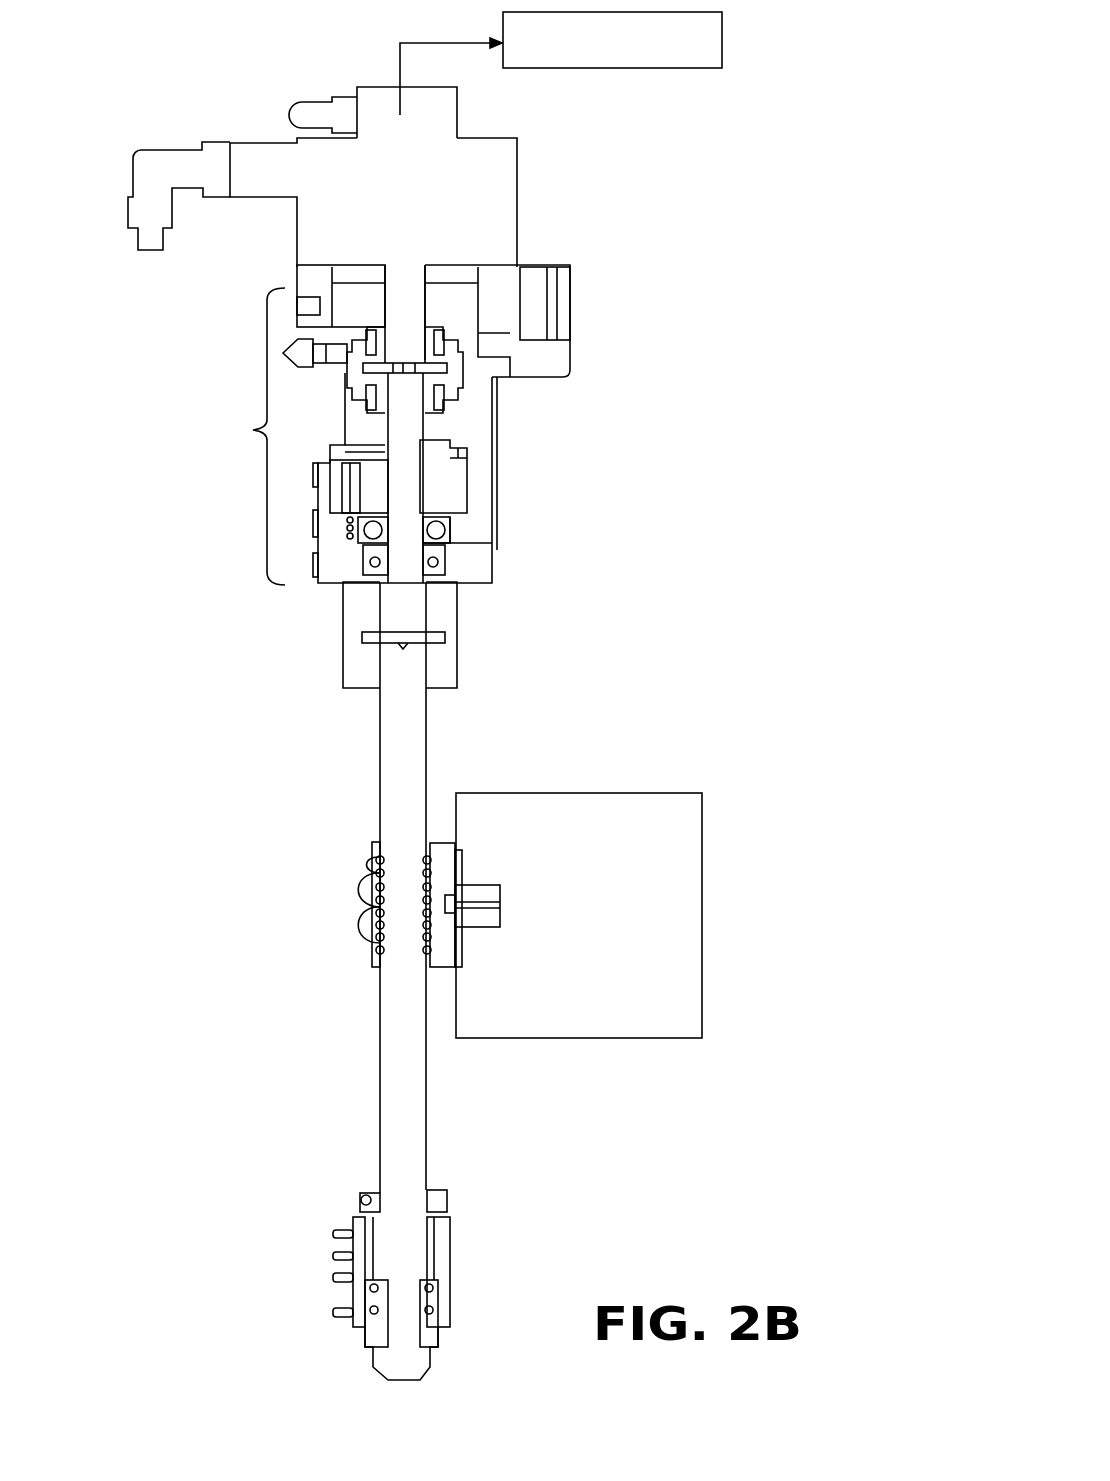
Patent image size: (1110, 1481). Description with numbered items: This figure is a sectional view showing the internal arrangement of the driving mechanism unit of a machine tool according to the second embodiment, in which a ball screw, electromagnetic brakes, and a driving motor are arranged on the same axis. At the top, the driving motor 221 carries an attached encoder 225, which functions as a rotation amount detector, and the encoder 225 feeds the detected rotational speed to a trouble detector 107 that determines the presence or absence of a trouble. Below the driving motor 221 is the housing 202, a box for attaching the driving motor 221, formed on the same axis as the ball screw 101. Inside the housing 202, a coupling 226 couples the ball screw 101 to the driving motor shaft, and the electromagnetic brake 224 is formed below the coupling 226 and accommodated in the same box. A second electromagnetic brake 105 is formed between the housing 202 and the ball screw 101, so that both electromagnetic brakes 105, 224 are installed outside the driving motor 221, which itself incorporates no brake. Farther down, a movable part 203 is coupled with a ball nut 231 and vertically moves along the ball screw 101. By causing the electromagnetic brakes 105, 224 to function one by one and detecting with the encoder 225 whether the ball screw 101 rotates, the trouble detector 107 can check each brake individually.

The trouble detector 107 is at (722, 43).
The encoder 225 is at (442, 102).
The driving motor 221 is at (477, 212).
The housing 202 is at (363, 425).
The coupling 226 is at (465, 378).
The electromagnetic brake 224 is at (452, 490).
The electromagnetic brake 105 is at (447, 663).
The ball screw 101 is at (387, 768).
The movable part 203 is at (677, 860).
The ball nut 231 is at (447, 947).